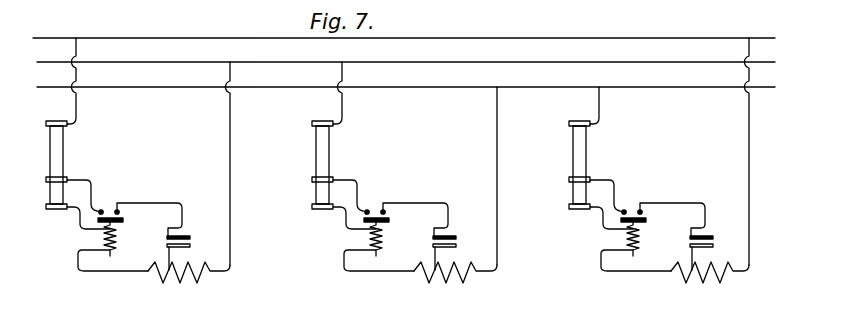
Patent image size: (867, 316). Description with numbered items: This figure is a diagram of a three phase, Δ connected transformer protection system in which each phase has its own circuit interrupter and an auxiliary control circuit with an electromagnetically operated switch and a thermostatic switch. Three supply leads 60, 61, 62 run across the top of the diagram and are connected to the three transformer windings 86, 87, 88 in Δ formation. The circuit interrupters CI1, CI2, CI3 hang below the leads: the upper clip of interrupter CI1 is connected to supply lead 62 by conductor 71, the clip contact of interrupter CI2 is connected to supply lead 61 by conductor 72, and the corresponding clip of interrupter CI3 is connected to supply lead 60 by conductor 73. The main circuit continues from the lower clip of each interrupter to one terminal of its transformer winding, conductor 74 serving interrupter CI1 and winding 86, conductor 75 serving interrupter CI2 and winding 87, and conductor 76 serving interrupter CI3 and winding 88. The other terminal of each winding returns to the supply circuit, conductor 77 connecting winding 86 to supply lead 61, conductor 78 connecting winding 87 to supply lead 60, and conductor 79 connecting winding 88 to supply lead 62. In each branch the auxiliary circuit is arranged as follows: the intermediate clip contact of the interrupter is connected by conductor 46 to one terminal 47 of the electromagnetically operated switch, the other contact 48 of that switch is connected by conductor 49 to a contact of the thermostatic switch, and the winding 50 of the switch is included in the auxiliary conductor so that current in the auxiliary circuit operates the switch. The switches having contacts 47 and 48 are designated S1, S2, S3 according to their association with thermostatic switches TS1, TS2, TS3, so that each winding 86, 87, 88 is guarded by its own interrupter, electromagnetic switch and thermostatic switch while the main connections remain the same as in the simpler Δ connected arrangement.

The supply lead 60 is at (160, 86).
The supply lead 61 is at (138, 61).
The supply lead 62 is at (119, 37).
The conductor 71 is at (77, 114).
The conductor 72 is at (343, 114).
The conductor 73 is at (600, 114).
The conductor 74 is at (78, 255).
The conductor 75 is at (344, 255).
The conductor 76 is at (601, 255).
The conductor 77 is at (231, 198).
The conductor 78 is at (498, 198).
The conductor 79 is at (750, 198).
The conductor 46 is at (80, 180).
The terminal of switch 47 is at (101, 209).
The contact of switch 48 is at (123, 220).
The conductor 49 is at (192, 200).
The winding of switch 50 is at (117, 241).
The transformer winding 86 is at (172, 284).
The transformer winding 87 is at (438, 284).
The transformer winding 88 is at (695, 284).
The circuit interrupter CI1 is at (50, 159).
The circuit interrupter CI2 is at (316, 159).
The circuit interrupter CI3 is at (573, 159).
The electromagnetically operated switch S1 is at (118, 208).
The electromagnetically operated switch S2 is at (384, 208).
The electromagnetically operated switch S3 is at (641, 208).
The thermostatic switch TS1 is at (197, 243).
The thermostatic switch TS2 is at (463, 243).
The thermostatic switch TS3 is at (720, 243).